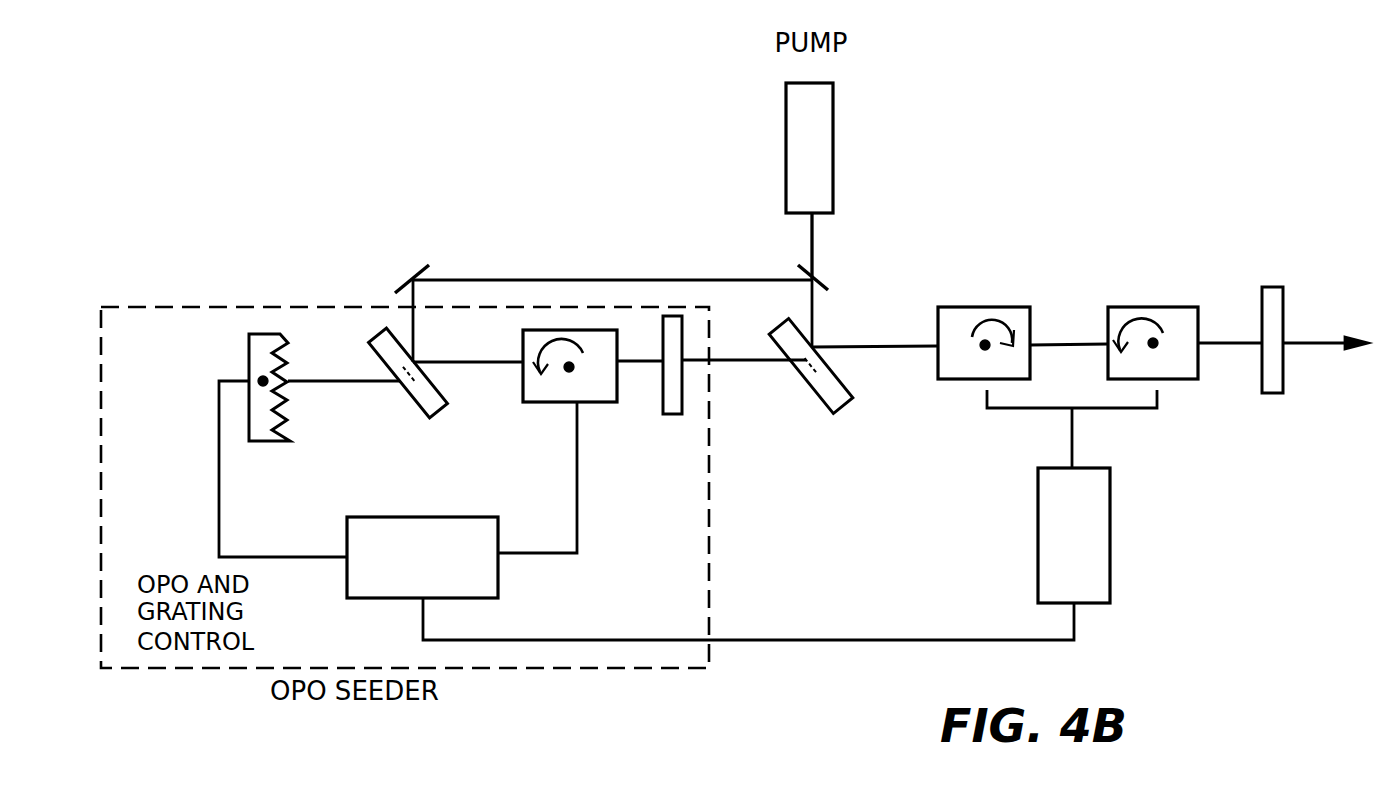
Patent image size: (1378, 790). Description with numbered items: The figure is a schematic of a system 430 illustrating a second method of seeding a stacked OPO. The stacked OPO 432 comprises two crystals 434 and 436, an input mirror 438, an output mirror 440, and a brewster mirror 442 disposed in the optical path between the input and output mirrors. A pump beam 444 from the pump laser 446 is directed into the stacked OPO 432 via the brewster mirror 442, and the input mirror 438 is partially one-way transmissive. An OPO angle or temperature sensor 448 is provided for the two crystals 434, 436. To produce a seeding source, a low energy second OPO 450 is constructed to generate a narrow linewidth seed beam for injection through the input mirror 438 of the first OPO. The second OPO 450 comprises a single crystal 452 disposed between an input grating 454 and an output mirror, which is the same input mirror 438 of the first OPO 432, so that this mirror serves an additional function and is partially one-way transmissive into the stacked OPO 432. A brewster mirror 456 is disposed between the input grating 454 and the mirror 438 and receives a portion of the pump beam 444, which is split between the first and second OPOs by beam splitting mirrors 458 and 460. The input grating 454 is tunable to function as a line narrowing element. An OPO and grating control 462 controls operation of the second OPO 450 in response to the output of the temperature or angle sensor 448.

The system 430 is at (962, 207).
The stacked OPO 432 is at (1060, 288).
The crystal 434 is at (970, 307).
The crystal 436 is at (1153, 307).
The input mirror 438 is at (673, 417).
The output mirror 440 is at (1277, 287).
The brewster mirror 442 is at (807, 383).
The pump beam 444 is at (814, 230).
The pump laser 446 is at (837, 148).
The OPO angle or temperature sensor 448 is at (1038, 532).
The low energy OPO 450 is at (187, 308).
The single crystal 452 is at (538, 404).
The input grating 454 is at (249, 352).
The brewster mirror 456 is at (420, 412).
The beam splitting mirror 458 is at (408, 278).
The beam splitting mirror 460 is at (802, 268).
The OPO and grating control 462 is at (498, 575).